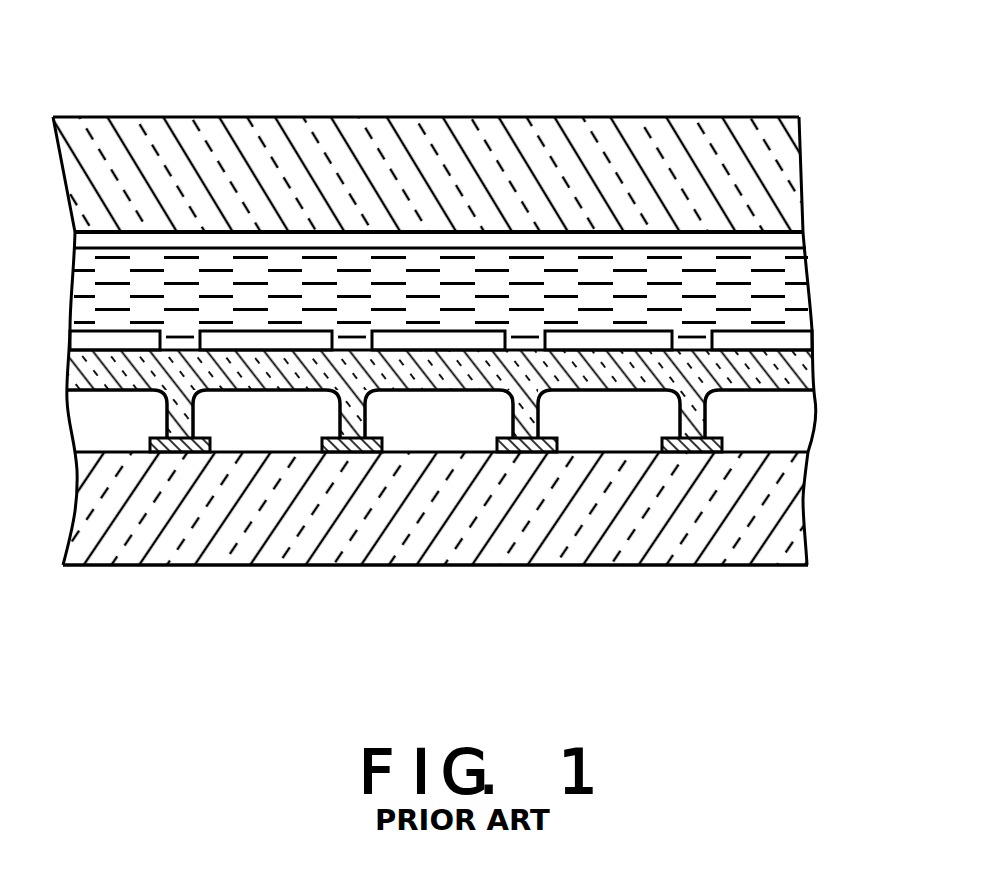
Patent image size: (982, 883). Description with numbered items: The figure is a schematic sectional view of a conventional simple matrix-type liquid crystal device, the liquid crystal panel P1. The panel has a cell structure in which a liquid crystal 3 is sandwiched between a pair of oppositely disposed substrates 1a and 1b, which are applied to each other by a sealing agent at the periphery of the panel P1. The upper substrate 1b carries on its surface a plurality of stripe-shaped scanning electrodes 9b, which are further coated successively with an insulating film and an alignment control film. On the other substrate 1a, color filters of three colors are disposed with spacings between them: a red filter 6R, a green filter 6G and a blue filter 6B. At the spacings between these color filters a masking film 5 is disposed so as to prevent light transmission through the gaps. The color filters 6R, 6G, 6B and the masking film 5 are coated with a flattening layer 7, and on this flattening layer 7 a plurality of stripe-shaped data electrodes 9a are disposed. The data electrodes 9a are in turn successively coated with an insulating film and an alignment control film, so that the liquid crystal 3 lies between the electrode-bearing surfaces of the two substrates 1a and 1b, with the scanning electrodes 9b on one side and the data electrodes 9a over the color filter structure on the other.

The liquid crystal panel P1 is at (694, 108).
The substrate 1b is at (783, 190).
The scanning electrodes 9b is at (785, 242).
The liquid crystal 3 is at (793, 276).
The data electrodes 9a is at (800, 343).
The flattening layer 7 is at (797, 378).
The masking film 5 is at (722, 447).
The substrate 1a is at (785, 510).
The red filter 6R is at (277, 435).
The green filter 6G is at (447, 435).
The blue filter 6B is at (615, 435).